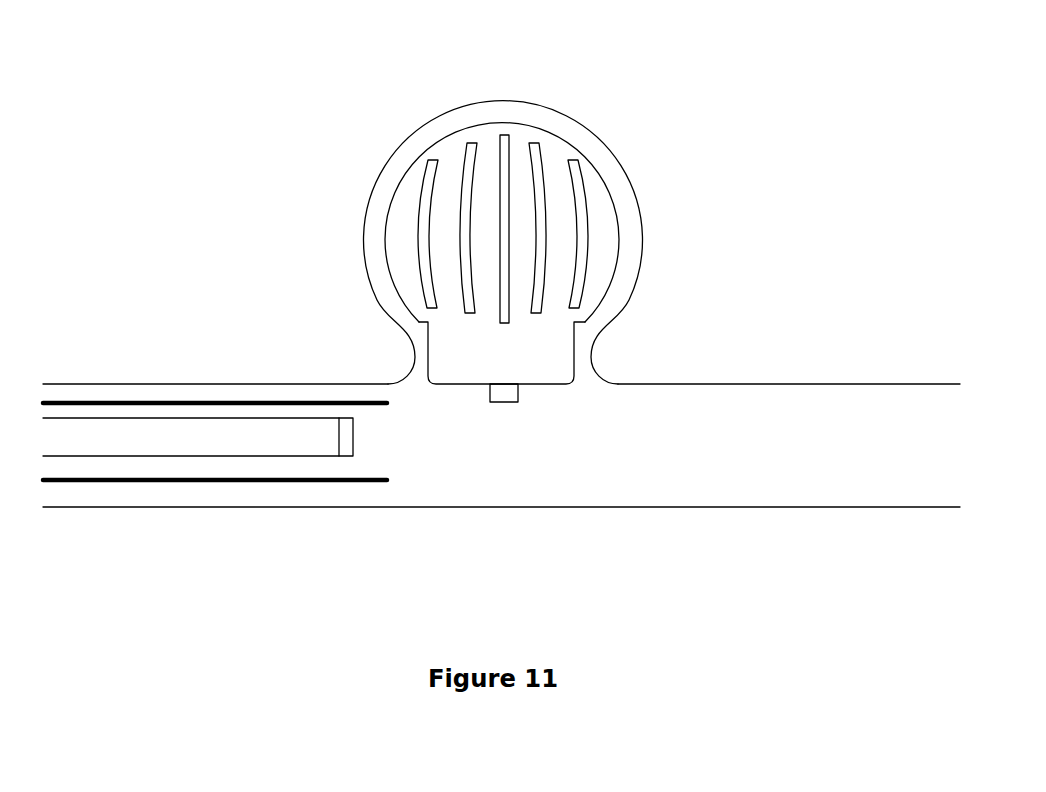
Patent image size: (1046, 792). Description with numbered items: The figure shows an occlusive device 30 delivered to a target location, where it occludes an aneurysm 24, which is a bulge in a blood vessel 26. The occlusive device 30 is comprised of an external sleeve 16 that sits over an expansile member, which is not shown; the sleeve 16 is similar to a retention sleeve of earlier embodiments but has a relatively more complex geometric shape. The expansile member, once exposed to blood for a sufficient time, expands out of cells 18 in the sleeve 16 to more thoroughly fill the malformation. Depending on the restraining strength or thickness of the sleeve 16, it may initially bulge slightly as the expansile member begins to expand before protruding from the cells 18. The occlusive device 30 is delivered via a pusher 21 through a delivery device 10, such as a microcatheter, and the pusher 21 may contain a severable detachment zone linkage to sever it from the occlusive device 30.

The delivery device 10 is at (78, 489).
The external sleeve 16 is at (560, 367).
The cells 18 is at (582, 230).
The pusher 21 is at (145, 466).
The aneurysm 24 is at (408, 132).
The blood vessel 26 is at (827, 519).
The occlusive device 30 is at (588, 145).